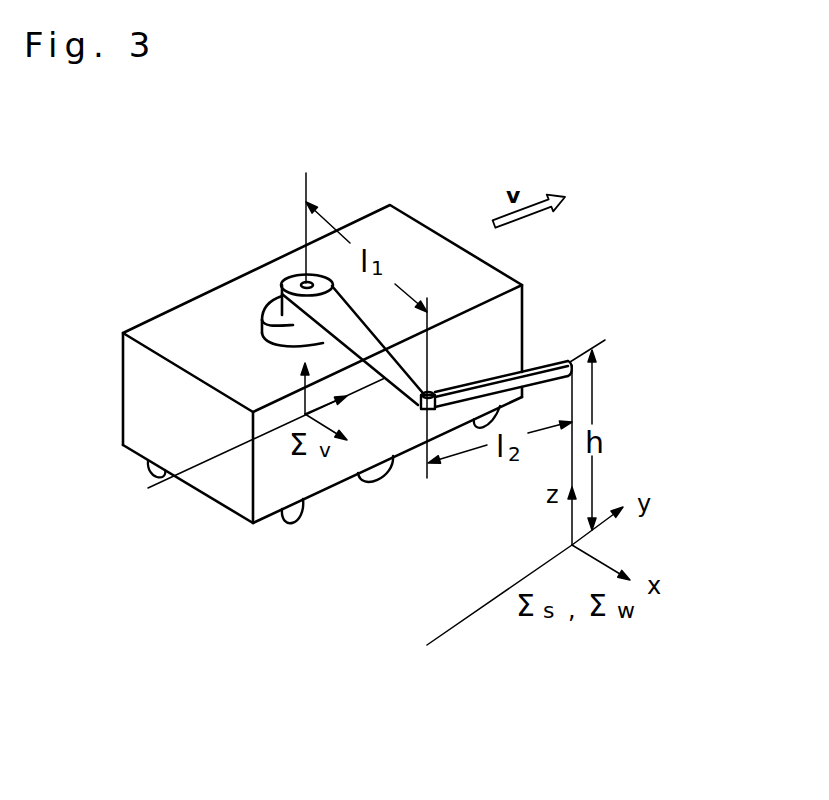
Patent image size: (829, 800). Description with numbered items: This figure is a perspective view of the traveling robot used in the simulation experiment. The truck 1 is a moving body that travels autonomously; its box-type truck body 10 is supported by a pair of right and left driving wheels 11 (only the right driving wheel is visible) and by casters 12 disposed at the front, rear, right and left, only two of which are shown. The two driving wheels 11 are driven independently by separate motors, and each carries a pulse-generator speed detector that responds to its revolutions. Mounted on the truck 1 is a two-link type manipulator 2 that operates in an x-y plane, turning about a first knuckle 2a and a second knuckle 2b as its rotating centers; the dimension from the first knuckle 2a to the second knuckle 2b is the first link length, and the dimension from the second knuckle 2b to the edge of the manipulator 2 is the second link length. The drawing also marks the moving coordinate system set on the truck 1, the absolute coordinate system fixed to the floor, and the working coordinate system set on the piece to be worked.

The truck 1 is at (196, 282).
The manipulator 2 is at (370, 398).
The first knuckle 2a is at (303, 284).
The second knuckle 2b is at (430, 390).
The truck body 10 is at (512, 333).
The driving wheel 11 is at (393, 467).
The caster 12 is at (298, 512).